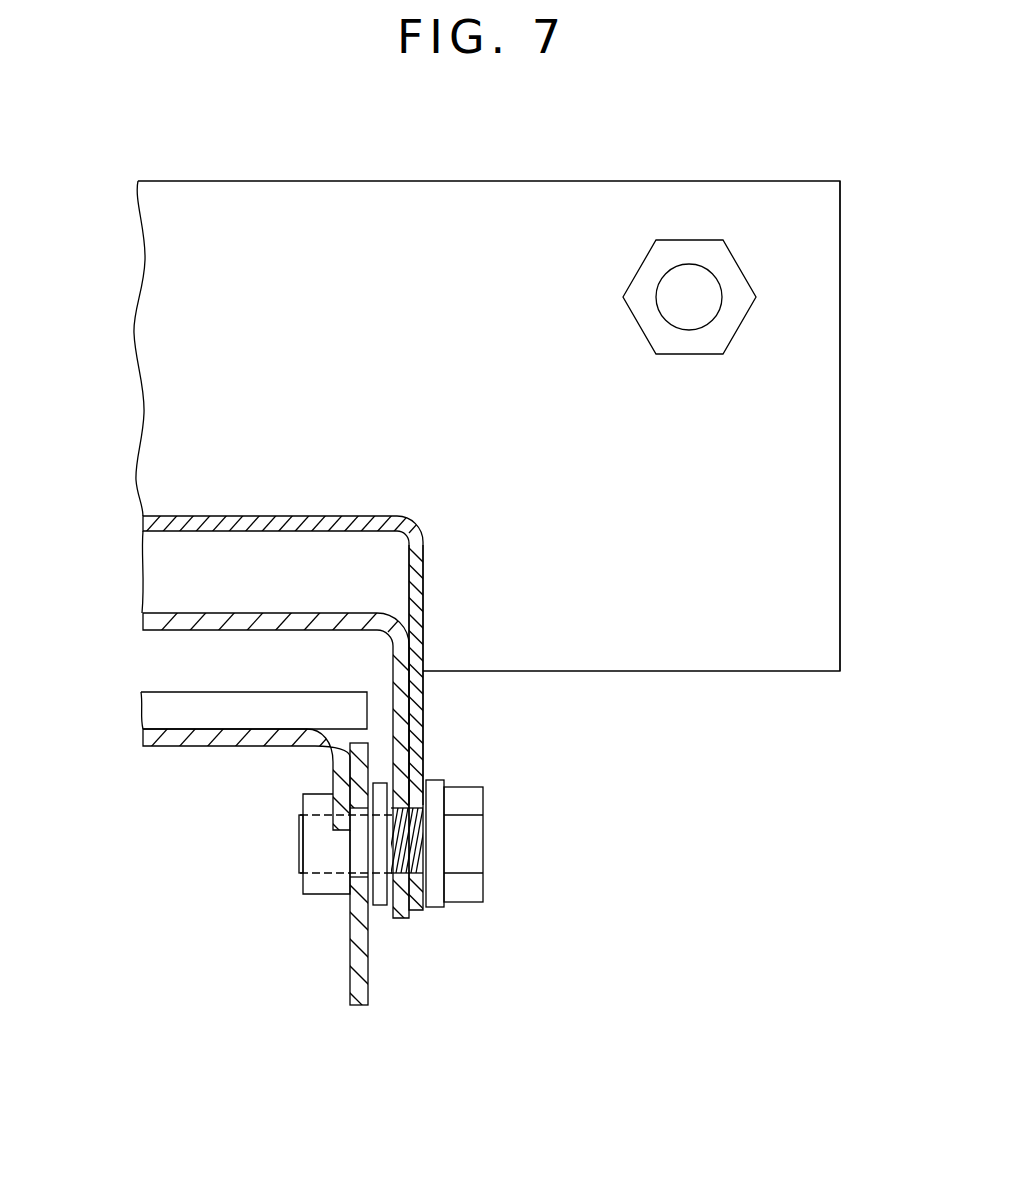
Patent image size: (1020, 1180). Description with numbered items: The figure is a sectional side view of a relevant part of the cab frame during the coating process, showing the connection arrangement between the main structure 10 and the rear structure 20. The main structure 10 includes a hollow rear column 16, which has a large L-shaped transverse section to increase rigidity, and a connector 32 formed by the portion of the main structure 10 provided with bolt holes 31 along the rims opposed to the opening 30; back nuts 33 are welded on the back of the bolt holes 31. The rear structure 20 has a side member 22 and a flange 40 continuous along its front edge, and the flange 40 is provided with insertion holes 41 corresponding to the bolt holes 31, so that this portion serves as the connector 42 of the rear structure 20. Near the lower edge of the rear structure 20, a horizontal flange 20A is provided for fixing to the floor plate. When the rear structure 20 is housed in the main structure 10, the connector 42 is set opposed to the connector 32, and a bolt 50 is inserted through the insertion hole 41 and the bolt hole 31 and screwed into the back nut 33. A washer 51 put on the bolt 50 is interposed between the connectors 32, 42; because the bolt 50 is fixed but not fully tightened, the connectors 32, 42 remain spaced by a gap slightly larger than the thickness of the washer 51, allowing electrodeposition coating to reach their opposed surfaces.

The main structure 10 is at (152, 862).
The rear column 16 is at (365, 973).
The rear structure 20 is at (128, 485).
The horizontal flange 20A is at (817, 510).
The left side member 22 is at (215, 630).
The opening 30 is at (362, 653).
The bolt hole 31 is at (353, 863).
The connector 32 is at (368, 943).
The back nut 33 is at (315, 885).
The flange 40 is at (410, 738).
The insertion hole 41 is at (422, 820).
The connector 42 is at (423, 710).
The bolt 50 is at (477, 843).
The washer 51 is at (380, 905).